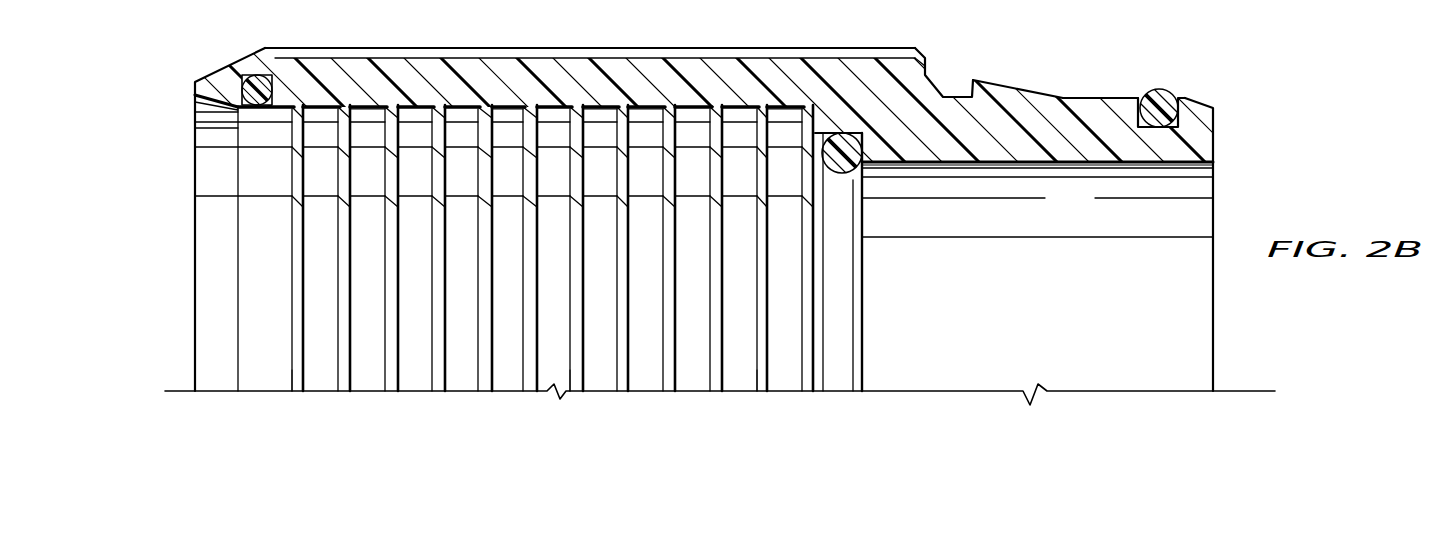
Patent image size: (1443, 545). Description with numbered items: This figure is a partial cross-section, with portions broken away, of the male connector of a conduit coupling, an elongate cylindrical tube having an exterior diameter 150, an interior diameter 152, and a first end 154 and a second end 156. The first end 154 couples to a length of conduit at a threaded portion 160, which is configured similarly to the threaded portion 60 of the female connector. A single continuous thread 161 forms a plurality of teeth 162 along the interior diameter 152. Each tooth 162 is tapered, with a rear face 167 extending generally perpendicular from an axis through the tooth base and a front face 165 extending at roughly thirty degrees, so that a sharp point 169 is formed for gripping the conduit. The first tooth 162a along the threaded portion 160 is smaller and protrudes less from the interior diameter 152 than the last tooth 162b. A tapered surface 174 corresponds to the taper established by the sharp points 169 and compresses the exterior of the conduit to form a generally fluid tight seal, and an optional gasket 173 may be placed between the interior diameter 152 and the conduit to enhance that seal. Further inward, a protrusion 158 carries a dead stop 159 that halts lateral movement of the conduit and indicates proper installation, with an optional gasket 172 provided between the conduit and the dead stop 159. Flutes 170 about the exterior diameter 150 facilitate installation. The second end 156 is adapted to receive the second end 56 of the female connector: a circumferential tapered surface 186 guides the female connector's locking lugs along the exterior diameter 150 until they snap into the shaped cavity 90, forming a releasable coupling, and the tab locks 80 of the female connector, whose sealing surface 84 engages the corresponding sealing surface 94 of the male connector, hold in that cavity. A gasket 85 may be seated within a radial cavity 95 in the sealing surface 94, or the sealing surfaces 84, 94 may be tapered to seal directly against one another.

The exterior diameter 150 is at (860, 46).
The interior diameter 152 is at (366, 122).
The first end 154 is at (186, 244).
The second end 156 is at (1254, 314).
The protrusion 158 is at (1067, 157).
The dead stop 159 is at (941, 161).
The threaded portion 160 is at (506, 312).
The single continuous thread 161 is at (298, 372).
The teeth 162 is at (438, 106).
The first tooth 162a is at (293, 110).
The last tooth 162b is at (770, 114).
The front face 165 is at (608, 116).
The rear face 167 is at (645, 117).
The sharp point 169 is at (492, 116).
The flutes 170 is at (386, 56).
The gasket 172 is at (866, 184).
The gasket 173 is at (242, 80).
The tapered surface 174 is at (846, 134).
The circumferential tapered surface 186 is at (1009, 87).
The shaped cavity 90 is at (963, 97).
The sealing surface 94 is at (1106, 98).
The radial cavity 95 is at (1172, 92).
The gasket 85 is at (1157, 90).
The tab locks 80 is at (196, 9).
The second end 56 is at (270, 9).
The threaded portion 60 is at (975, 8).
The sealing surface 84 is at (1170, 8).